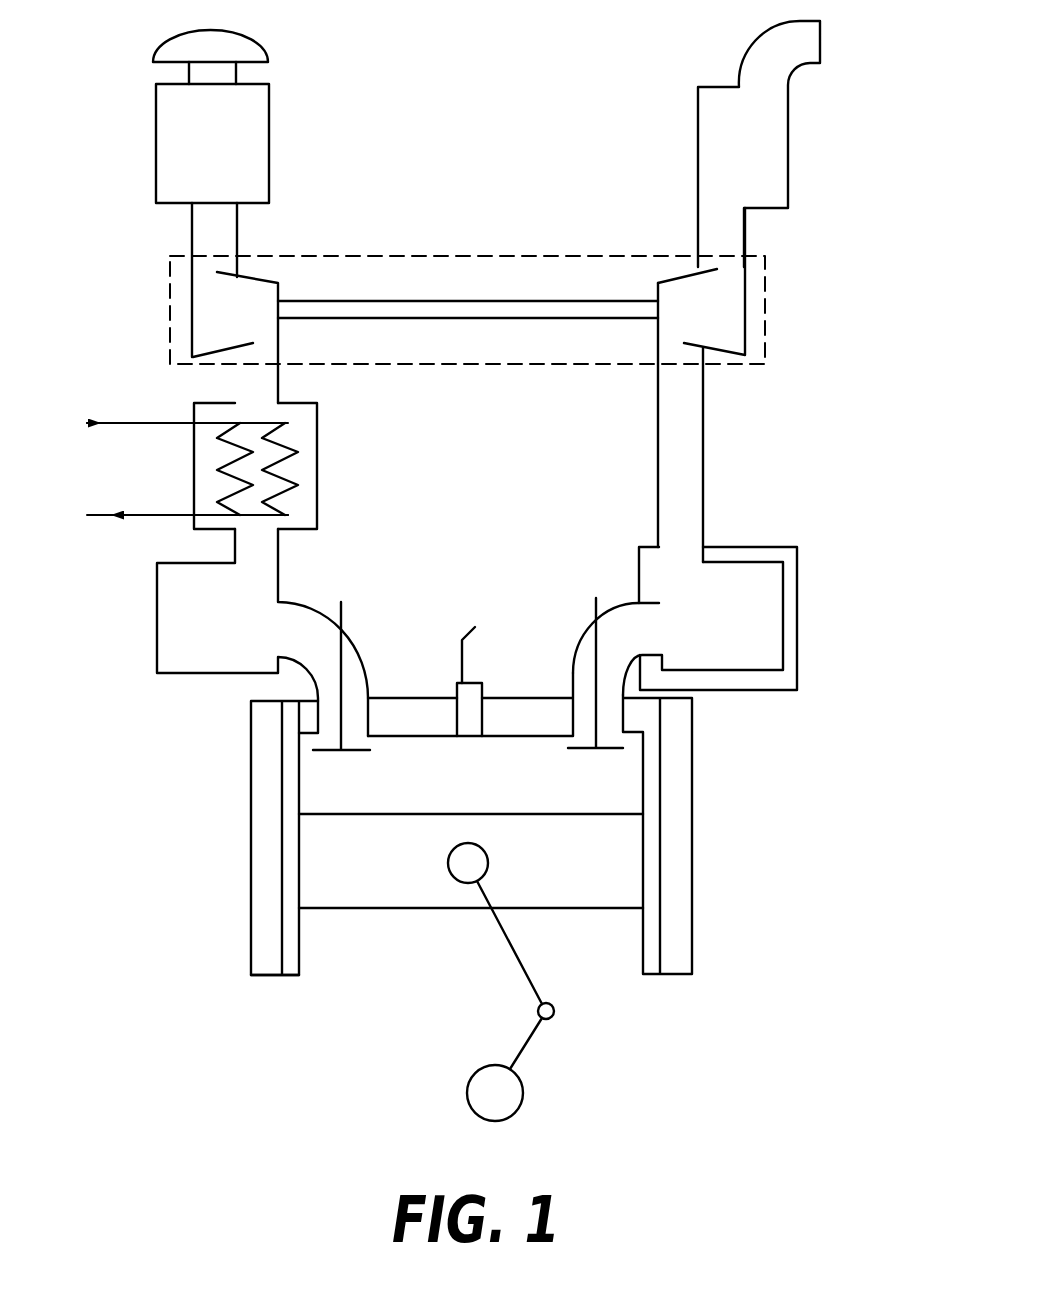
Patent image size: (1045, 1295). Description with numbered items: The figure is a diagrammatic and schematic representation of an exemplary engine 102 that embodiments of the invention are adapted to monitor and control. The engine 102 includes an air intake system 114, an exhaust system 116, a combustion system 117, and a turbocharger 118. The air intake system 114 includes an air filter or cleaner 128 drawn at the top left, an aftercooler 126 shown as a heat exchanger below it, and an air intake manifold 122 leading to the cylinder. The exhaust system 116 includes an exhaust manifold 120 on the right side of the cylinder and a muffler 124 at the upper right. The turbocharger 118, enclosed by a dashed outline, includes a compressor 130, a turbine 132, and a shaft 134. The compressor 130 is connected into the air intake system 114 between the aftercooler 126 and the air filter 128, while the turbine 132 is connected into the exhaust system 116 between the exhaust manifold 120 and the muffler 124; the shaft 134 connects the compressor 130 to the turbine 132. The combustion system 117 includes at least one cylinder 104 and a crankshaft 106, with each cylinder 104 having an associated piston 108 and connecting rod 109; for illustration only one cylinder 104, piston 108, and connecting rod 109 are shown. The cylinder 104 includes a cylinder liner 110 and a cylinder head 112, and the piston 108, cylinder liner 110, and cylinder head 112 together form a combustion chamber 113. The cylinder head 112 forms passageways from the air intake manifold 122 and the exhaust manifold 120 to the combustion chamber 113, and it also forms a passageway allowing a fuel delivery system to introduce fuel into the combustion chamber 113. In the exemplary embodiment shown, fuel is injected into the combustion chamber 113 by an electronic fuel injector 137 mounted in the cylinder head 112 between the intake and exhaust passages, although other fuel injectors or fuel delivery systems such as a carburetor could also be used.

The engine 102 is at (556, 126).
The cylinder 104 is at (706, 907).
The crankshaft 106 is at (536, 1054).
The piston 108 is at (616, 868).
The connecting rod 109 is at (484, 935).
The cylinder liner 110 is at (291, 975).
The cylinder head 112 is at (256, 688).
The combustion chamber 113 is at (641, 789).
The air intake system 114 is at (92, 474).
The exhaust system 116 is at (724, 72).
The combustion system 117 is at (346, 796).
The turbocharger 118 is at (520, 234).
The exhaust manifold 120 is at (768, 690).
The air intake manifold 122 is at (173, 673).
The muffler 124 is at (788, 180).
The aftercooler 126 is at (317, 460).
The air filter 128 is at (156, 153).
The compressor 130 is at (193, 318).
The turbine 132 is at (745, 313).
The shaft 134 is at (596, 301).
The electronic fuel injector 137 is at (478, 694).